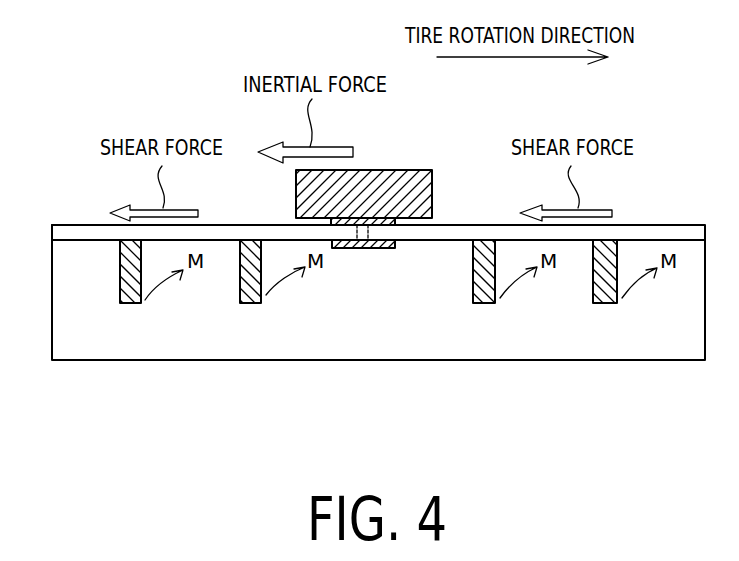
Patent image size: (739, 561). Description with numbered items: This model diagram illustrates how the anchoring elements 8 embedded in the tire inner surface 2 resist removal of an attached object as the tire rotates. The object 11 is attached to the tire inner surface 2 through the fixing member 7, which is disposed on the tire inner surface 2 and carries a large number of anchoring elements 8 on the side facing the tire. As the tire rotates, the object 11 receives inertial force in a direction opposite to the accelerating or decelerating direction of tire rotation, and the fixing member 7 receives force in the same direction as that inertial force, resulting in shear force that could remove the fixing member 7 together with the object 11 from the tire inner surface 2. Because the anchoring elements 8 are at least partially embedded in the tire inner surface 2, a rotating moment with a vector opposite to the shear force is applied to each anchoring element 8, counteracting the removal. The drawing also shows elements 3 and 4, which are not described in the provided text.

The tire inner surface 2 is at (92, 243).
The attachment member 3 is at (370, 249).
The tread portion 4 is at (689, 340).
The fixing member 7 is at (682, 234).
The anchoring elements 8 is at (250, 294).
The object 11 is at (410, 168).